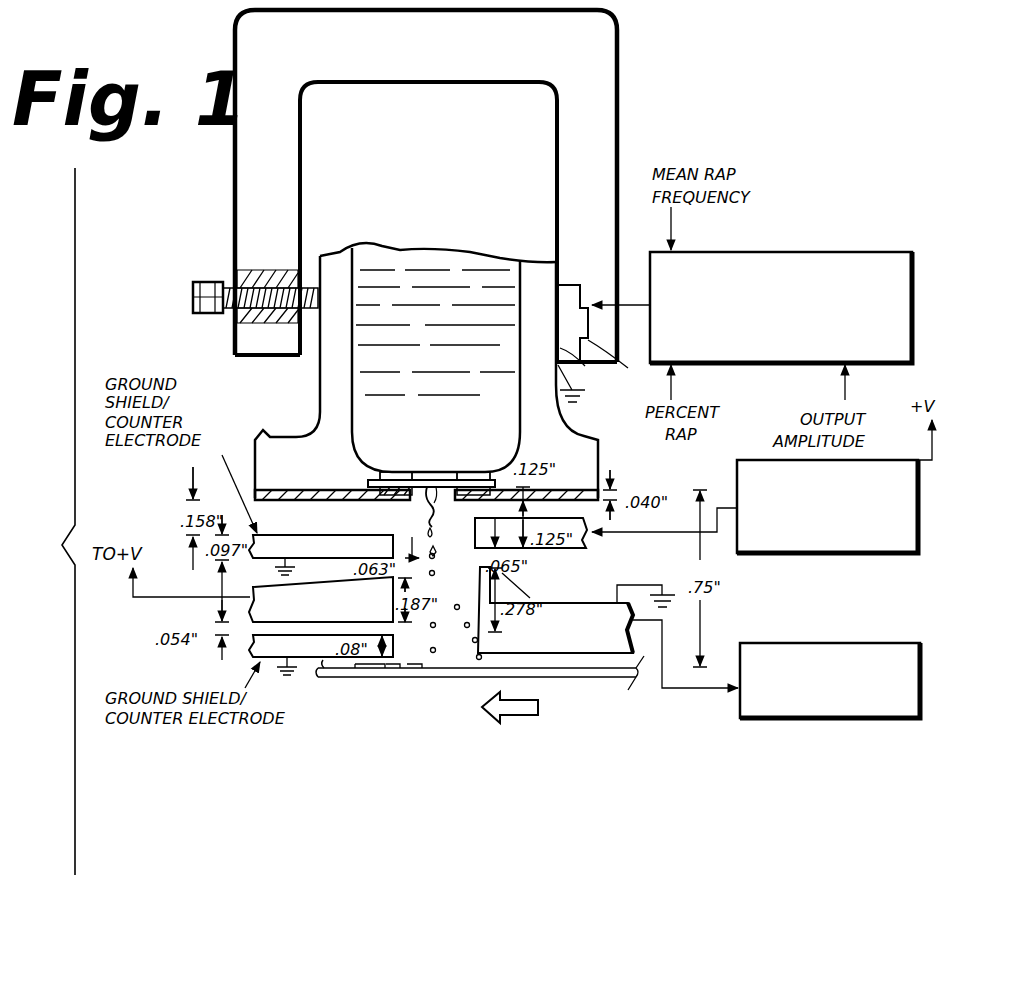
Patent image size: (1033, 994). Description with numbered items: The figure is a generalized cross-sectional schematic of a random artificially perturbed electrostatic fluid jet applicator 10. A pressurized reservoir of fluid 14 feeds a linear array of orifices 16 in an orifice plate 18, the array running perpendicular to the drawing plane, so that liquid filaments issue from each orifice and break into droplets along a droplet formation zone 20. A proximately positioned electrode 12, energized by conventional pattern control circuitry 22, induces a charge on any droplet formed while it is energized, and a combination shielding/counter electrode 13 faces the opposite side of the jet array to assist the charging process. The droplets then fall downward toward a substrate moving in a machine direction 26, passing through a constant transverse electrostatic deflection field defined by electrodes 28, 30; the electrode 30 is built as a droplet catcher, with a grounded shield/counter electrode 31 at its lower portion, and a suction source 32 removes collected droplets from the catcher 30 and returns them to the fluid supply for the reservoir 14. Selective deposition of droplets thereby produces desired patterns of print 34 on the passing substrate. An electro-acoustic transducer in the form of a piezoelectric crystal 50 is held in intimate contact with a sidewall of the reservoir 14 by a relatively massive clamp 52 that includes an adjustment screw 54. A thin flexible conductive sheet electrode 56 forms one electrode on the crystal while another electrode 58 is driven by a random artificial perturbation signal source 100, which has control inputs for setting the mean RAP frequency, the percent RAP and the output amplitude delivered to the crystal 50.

The random artificially perturbed electrostatic fluid jet applicator 10 is at (138, 542).
The electrode 12 is at (476, 541).
The shielding/counter electrode 13 is at (312, 558).
The pressurized reservoir of fluid 14 is at (446, 416).
The orifices 16 is at (431, 480).
The orifice plate 18 is at (416, 496).
The droplet formation zone 20 is at (470, 552).
The pattern control circuitry 22 is at (735, 476).
The machine direction 26 is at (524, 718).
The deflection electrode 28 is at (319, 618).
The catcher electrode 30 is at (611, 630).
The grounded shield/counter electrode 31 is at (305, 660).
The suction source 32 is at (766, 643).
The patterns of print 34 is at (410, 668).
The piezoelectric crystal 50 is at (565, 284).
The clamp 52 is at (369, 72).
The adjustment screw 54 is at (222, 286).
The conductive sheet electrode 56 is at (584, 370).
The electrode 58 is at (619, 366).
The random artificial perturbation signal source 100 is at (805, 252).